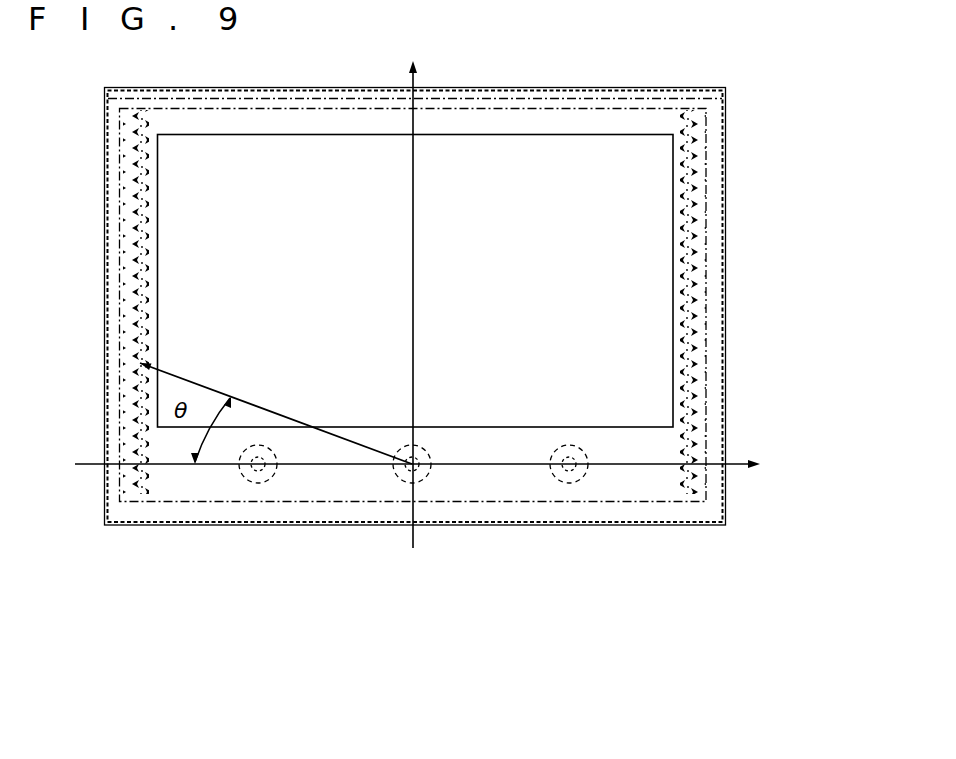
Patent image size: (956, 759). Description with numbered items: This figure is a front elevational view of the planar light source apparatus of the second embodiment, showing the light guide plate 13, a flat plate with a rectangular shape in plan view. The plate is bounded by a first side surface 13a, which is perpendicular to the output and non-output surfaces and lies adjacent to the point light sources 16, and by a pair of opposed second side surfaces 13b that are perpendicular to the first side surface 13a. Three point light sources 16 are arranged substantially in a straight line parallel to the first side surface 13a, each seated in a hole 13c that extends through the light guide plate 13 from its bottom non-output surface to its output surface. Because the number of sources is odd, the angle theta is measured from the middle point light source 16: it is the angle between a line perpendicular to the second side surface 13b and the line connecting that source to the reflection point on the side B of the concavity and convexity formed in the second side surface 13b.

The light guide plate 13 is at (162, 477).
The first side surface 13a is at (603, 498).
The second side surface 13b is at (127, 225).
The hole 13c is at (240, 472).
The point light source 16 is at (408, 467).
The side B is at (125, 357).